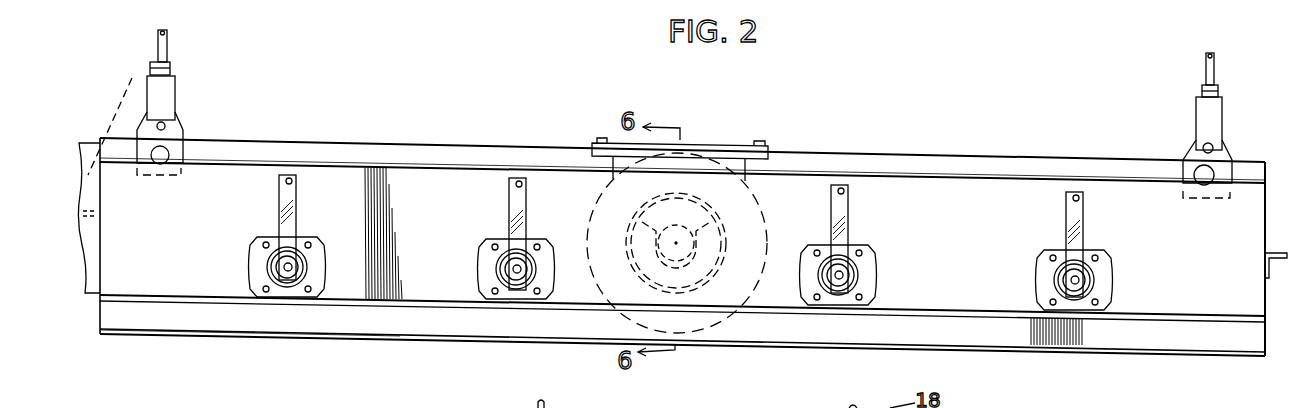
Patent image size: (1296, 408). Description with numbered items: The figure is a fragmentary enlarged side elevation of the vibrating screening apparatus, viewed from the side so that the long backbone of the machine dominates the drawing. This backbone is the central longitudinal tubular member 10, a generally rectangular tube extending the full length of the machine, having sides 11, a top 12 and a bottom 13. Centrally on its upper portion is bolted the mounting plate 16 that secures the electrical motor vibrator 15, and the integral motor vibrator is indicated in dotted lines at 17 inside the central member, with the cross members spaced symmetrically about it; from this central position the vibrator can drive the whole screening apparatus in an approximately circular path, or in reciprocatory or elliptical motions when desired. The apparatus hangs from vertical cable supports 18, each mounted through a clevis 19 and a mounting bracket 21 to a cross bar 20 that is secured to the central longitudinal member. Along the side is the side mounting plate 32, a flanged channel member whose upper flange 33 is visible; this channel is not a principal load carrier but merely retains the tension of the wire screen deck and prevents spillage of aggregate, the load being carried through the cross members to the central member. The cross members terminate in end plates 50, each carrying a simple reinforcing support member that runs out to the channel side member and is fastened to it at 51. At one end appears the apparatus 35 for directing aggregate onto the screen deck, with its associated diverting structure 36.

The central longitudinal tubular member 10 is at (941, 152).
The sides 11 is at (1189, 338).
The top 12 is at (292, 141).
The bottom 13 is at (183, 336).
The electrical motor vibrator 15 is at (733, 141).
The mounting plate 16 is at (702, 143).
The motor vibrator (dotted outline) 17 is at (778, 243).
The vertical support member 18 is at (1214, 74).
The clevis 19 is at (1216, 121).
The cross support member 20 is at (1200, 170).
The mounting bracket 21 is at (1232, 151).
The side mounting plate 32 is at (961, 292).
The upper flange 33 is at (1008, 178).
The aggregate directing apparatus 35 is at (87, 140).
The diverting structure 36 is at (112, 115).
The end plate 50 is at (1083, 275).
The fastening 51 is at (1084, 197).